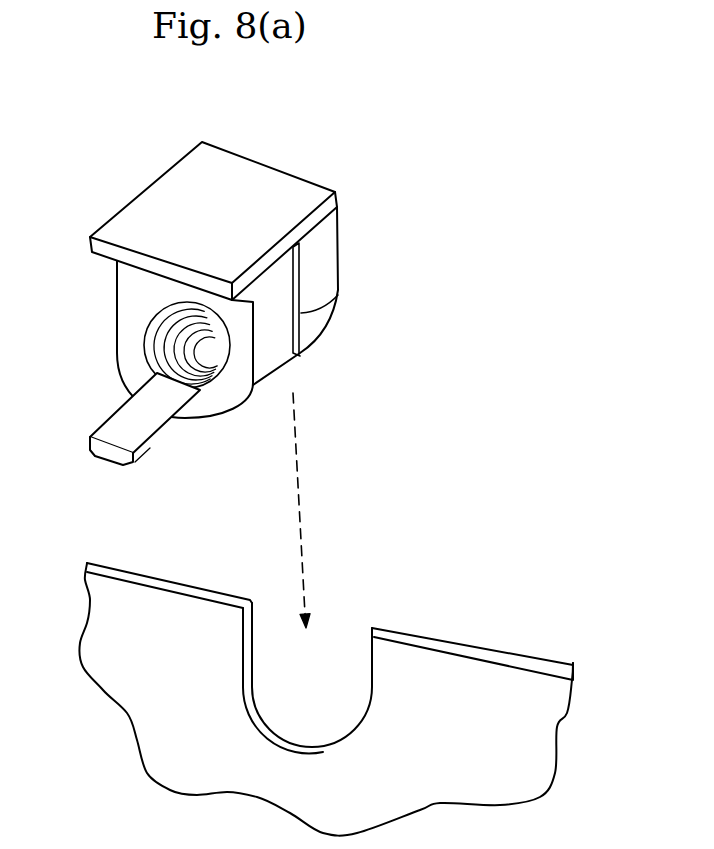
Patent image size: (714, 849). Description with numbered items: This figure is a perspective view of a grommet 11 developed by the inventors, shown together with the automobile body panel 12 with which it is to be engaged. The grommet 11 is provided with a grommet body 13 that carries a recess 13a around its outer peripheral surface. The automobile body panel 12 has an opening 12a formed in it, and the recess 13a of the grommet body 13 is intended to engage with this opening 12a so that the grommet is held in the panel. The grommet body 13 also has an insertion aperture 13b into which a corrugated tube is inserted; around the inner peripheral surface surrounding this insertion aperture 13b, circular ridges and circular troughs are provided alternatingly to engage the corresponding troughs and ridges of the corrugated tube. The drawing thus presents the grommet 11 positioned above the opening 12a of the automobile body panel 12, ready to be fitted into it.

The grommet 11 is at (256, 147).
The automobile body panel 12 is at (490, 660).
The opening 12a is at (370, 668).
The grommet body 13 is at (320, 222).
The recess 13a is at (338, 295).
The insertion aperture 13b is at (227, 358).